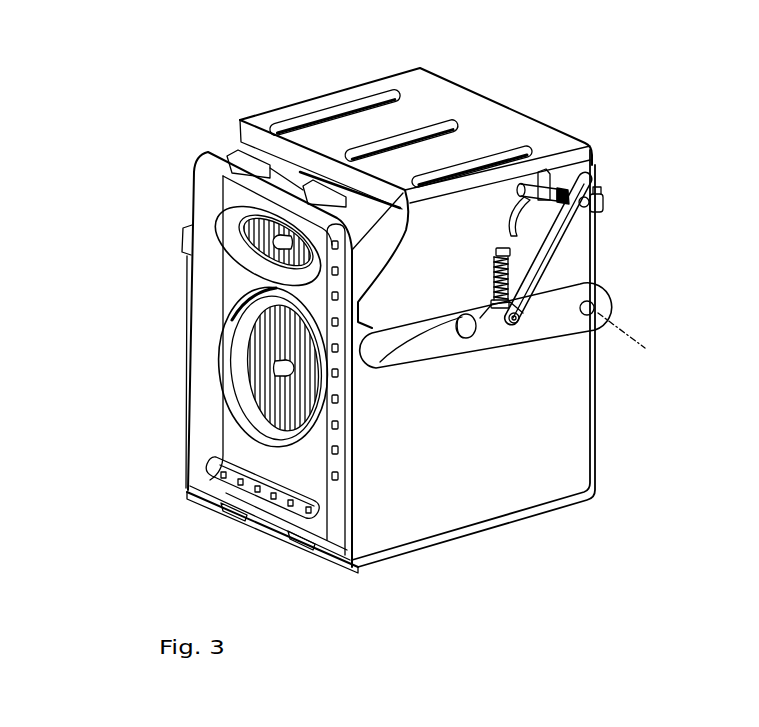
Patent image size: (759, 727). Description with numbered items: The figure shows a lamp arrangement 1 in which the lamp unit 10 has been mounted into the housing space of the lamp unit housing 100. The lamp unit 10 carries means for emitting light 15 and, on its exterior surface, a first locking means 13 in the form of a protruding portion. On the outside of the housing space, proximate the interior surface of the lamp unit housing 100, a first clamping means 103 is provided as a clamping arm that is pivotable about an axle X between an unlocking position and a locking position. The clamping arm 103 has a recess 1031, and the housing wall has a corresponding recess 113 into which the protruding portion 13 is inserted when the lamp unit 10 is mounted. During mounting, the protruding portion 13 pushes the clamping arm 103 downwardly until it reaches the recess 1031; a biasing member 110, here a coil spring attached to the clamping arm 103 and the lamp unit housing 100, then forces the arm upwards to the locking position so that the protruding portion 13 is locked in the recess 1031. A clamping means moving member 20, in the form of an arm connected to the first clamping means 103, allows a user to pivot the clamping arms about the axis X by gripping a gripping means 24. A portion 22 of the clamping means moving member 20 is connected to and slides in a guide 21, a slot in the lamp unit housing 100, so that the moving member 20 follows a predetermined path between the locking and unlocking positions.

The lamp arrangement 1 is at (630, 130).
The lamp unit 10 is at (189, 153).
The lamp unit housing 100 is at (468, 105).
The first clamping means 103 is at (503, 358).
The recess 1031 is at (461, 341).
The biasing member 110 is at (521, 310).
The recess 113 is at (364, 340).
The first locking means 13 is at (467, 340).
The means for emitting light 15 is at (262, 253).
The clamping means moving member 20 is at (582, 237).
The guide 21 is at (528, 226).
The portion of the clamping means moving member 22 is at (553, 176).
The gripping means 24 is at (600, 203).
The axle X is at (630, 339).